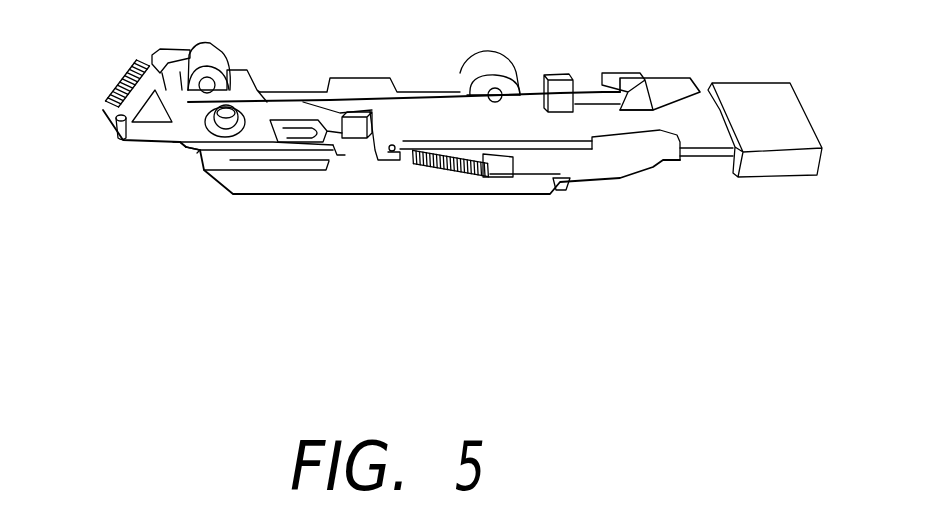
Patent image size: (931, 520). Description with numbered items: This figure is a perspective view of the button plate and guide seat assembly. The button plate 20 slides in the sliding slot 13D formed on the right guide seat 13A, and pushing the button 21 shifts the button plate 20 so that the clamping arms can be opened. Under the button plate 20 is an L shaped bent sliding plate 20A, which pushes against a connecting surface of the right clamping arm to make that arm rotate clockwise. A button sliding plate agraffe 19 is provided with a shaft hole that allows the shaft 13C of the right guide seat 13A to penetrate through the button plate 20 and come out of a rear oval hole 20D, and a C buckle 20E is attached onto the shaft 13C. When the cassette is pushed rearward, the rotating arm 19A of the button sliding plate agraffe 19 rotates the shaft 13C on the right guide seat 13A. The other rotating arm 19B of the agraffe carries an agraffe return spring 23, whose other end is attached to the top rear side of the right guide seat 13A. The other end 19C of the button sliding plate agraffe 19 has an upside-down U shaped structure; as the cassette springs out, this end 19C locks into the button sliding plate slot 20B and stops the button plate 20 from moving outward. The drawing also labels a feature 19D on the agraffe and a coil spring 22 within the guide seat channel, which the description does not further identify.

The right guide seat 13A is at (335, 145).
The shaft 13C is at (240, 137).
The sliding slot 13D is at (596, 144).
The button sliding plate agraffe 19 is at (283, 110).
The rotating arm 19A is at (117, 86).
The other rotating arm 19B is at (113, 127).
The other end of the button sliding plate agraffe 19C is at (343, 137).
The elongated hole of slide member 19D is at (243, 137).
The button plate 20 is at (588, 107).
The L shaped bent sliding plate 20A is at (622, 87).
The button sliding plate slot 20B is at (372, 103).
The rear oval hole 20D is at (297, 130).
The C buckle 20E is at (197, 148).
The button 21 is at (790, 103).
The coil spring 22 is at (457, 170).
The agraffe return spring 23 is at (147, 58).